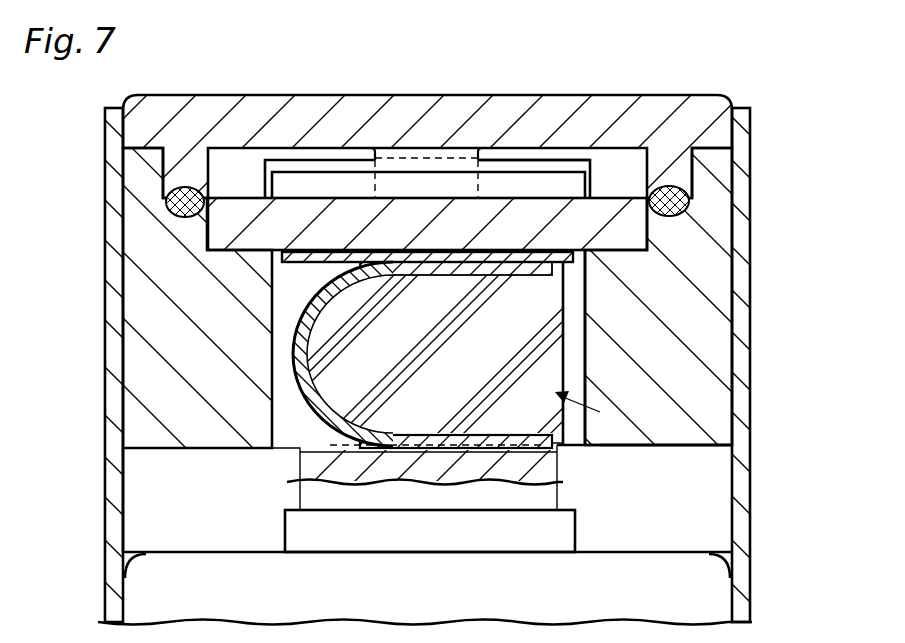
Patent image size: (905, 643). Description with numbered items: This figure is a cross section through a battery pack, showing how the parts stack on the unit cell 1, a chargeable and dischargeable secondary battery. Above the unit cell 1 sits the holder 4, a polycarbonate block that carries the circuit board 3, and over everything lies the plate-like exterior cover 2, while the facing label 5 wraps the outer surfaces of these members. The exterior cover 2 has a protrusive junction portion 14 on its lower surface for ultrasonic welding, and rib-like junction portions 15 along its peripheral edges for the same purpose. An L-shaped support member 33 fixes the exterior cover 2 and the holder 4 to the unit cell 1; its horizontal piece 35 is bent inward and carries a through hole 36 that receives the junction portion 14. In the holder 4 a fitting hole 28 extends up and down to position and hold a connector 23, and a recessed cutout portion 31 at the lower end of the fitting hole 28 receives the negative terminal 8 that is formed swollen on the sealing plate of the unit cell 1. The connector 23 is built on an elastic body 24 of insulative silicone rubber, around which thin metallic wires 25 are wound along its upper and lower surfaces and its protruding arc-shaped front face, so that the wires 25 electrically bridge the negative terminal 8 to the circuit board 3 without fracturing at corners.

The unit cell 1 is at (143, 592).
The exterior cover 2 is at (651, 96).
The circuit board 3 is at (633, 230).
The holder 4 is at (706, 278).
The facing label 5 is at (105, 362).
The negative terminal 8 is at (382, 467).
The protrusive junction portion 14 is at (454, 168).
The rib-like junction portion 15 is at (177, 188).
The connector 23 is at (595, 410).
The elastic body 24 is at (338, 388).
The thin metallic wire 25 is at (302, 342).
The fitting hole 28 is at (286, 436).
The recessed cutout portion 31 is at (670, 447).
The support member 33 is at (534, 105).
The horizontal piece 35 is at (533, 185).
The through hole 36 is at (400, 143).